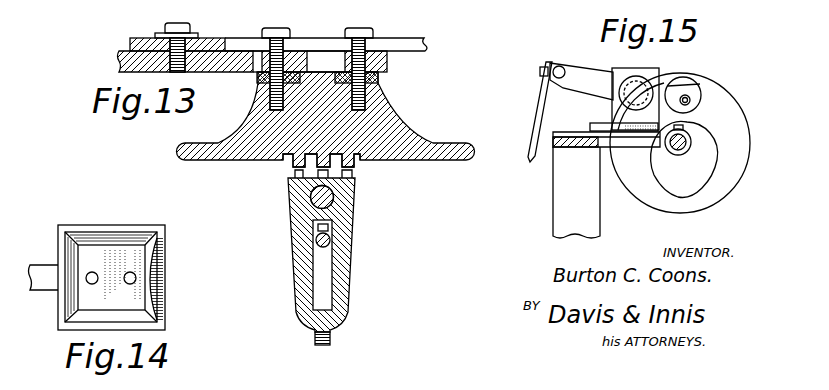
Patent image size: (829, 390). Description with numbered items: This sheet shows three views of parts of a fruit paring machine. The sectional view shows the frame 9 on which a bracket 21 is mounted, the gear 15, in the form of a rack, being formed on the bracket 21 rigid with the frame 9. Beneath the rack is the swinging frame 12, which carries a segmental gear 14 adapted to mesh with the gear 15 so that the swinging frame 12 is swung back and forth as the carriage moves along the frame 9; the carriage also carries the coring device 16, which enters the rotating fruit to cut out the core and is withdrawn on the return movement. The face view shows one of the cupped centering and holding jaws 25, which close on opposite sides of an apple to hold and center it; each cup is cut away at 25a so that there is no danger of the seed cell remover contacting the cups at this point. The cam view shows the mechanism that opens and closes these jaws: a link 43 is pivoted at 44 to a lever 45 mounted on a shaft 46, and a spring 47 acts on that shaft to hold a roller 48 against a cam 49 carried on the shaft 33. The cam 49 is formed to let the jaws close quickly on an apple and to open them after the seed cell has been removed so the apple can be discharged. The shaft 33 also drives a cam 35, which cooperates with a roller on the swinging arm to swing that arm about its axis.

In FIG. 13, the frame 9 is at (206, 63).
In FIG. 13, the coring device 16 is at (320, 1).
In FIG. 13, the bracket 21 is at (392, 131).
In FIG. 13, the gear 15 is at (291, 166).
In FIG. 13, the segmental gear 14 is at (347, 175).
In FIG. 13, the swinging frame 12 is at (345, 214).
In FIG. 14, the centering and holding jaws 25 is at (110, 237).
In FIG. 14, the cut away portion 25a is at (153, 280).
In FIG. 15, the link 43 is at (533, 144).
In FIG. 15, the pivot 44 is at (550, 71).
In FIG. 15, the lever 45 is at (588, 82).
In FIG. 15, the shaft 46 is at (640, 90).
In FIG. 15, the spring 47 is at (666, 80).
In FIG. 15, the roller 48 is at (694, 110).
In FIG. 15, the cam 35 is at (738, 130).
In FIG. 15, the cam 49 is at (708, 170).
In FIG. 15, the shaft 33 is at (688, 157).